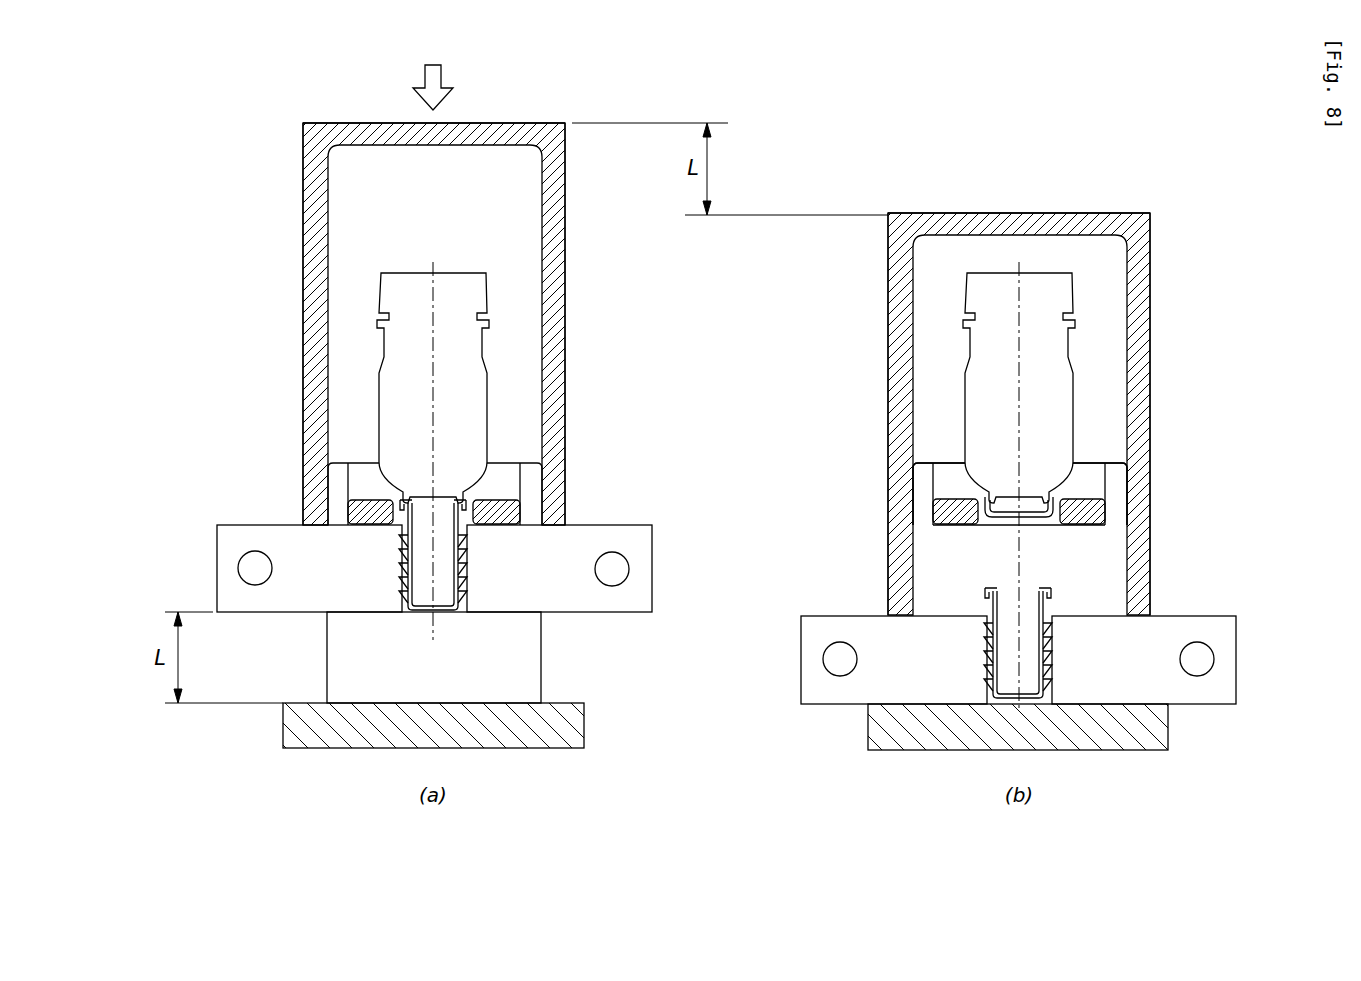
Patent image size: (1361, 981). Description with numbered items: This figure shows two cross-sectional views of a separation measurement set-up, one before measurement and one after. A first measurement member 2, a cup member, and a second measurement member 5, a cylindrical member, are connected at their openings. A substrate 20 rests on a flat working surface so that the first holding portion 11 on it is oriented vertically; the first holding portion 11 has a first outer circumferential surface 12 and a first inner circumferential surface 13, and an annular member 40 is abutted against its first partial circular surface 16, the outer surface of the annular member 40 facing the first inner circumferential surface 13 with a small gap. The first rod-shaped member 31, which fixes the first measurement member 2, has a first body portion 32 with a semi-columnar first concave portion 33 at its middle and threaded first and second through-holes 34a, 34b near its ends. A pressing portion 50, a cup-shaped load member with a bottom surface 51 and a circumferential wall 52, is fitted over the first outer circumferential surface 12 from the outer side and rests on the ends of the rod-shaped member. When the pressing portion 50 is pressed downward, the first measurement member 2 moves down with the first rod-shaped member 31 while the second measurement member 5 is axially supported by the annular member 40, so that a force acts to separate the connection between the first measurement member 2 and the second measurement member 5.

The first measurement member 2 is at (442, 608).
The second measurement member 5 is at (482, 366).
The first holding portion 11 is at (532, 650).
The first outer circumferential surface 12 is at (938, 462).
The first inner circumferential surface 13 is at (335, 482).
The first partial circular surface 16 is at (367, 522).
The substrate 20 is at (566, 719).
The first rod-shaped member 31 is at (639, 516).
The first body portion 32 is at (281, 533).
The first concave portion 33 is at (413, 592).
The first through-hole 34a is at (250, 570).
The second through-hole 34b is at (618, 573).
The annular member 40 is at (520, 498).
The pressing portion 50 is at (514, 118).
The bottom surface 51 is at (360, 122).
The circumferential wall 52 is at (566, 270).